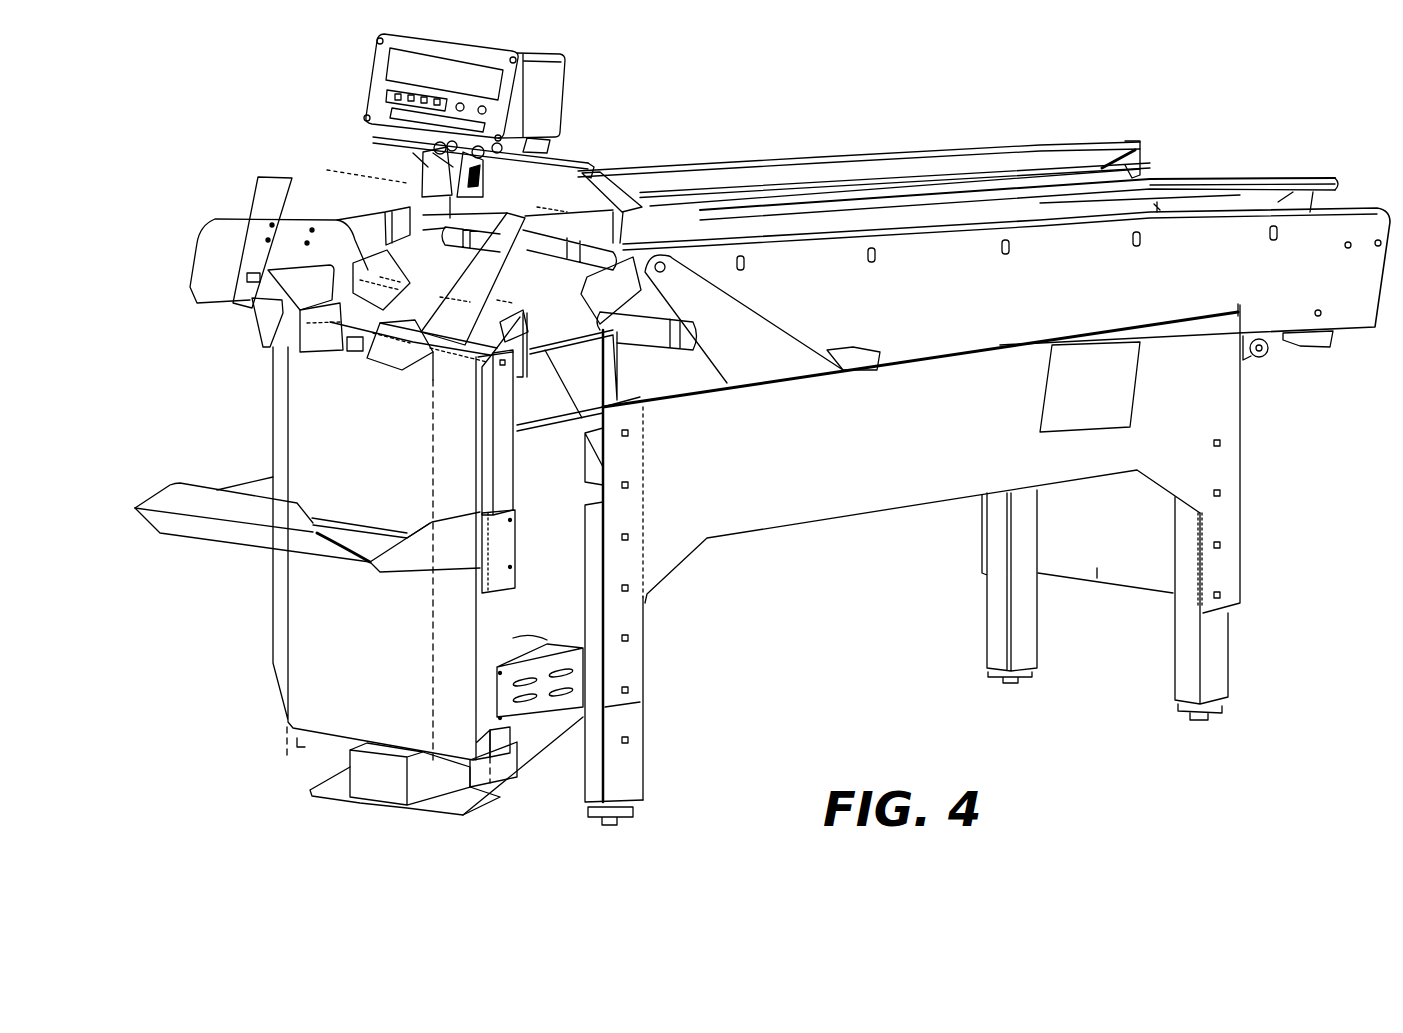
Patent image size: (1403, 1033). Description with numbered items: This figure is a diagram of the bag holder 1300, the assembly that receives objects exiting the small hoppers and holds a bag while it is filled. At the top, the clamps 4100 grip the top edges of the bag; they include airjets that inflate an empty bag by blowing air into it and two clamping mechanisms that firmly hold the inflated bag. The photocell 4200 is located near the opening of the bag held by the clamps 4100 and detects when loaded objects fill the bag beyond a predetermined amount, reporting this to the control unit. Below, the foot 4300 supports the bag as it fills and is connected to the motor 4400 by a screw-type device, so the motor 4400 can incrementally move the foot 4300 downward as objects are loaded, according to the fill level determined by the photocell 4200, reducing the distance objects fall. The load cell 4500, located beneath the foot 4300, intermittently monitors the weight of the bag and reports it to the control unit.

The bag holder 1300 is at (182, 201).
The clamps 4100 is at (262, 343).
The photocell 4200 is at (343, 354).
The foot 4300 is at (197, 530).
The motor 4400 is at (567, 717).
The load cell 4500 is at (360, 802).